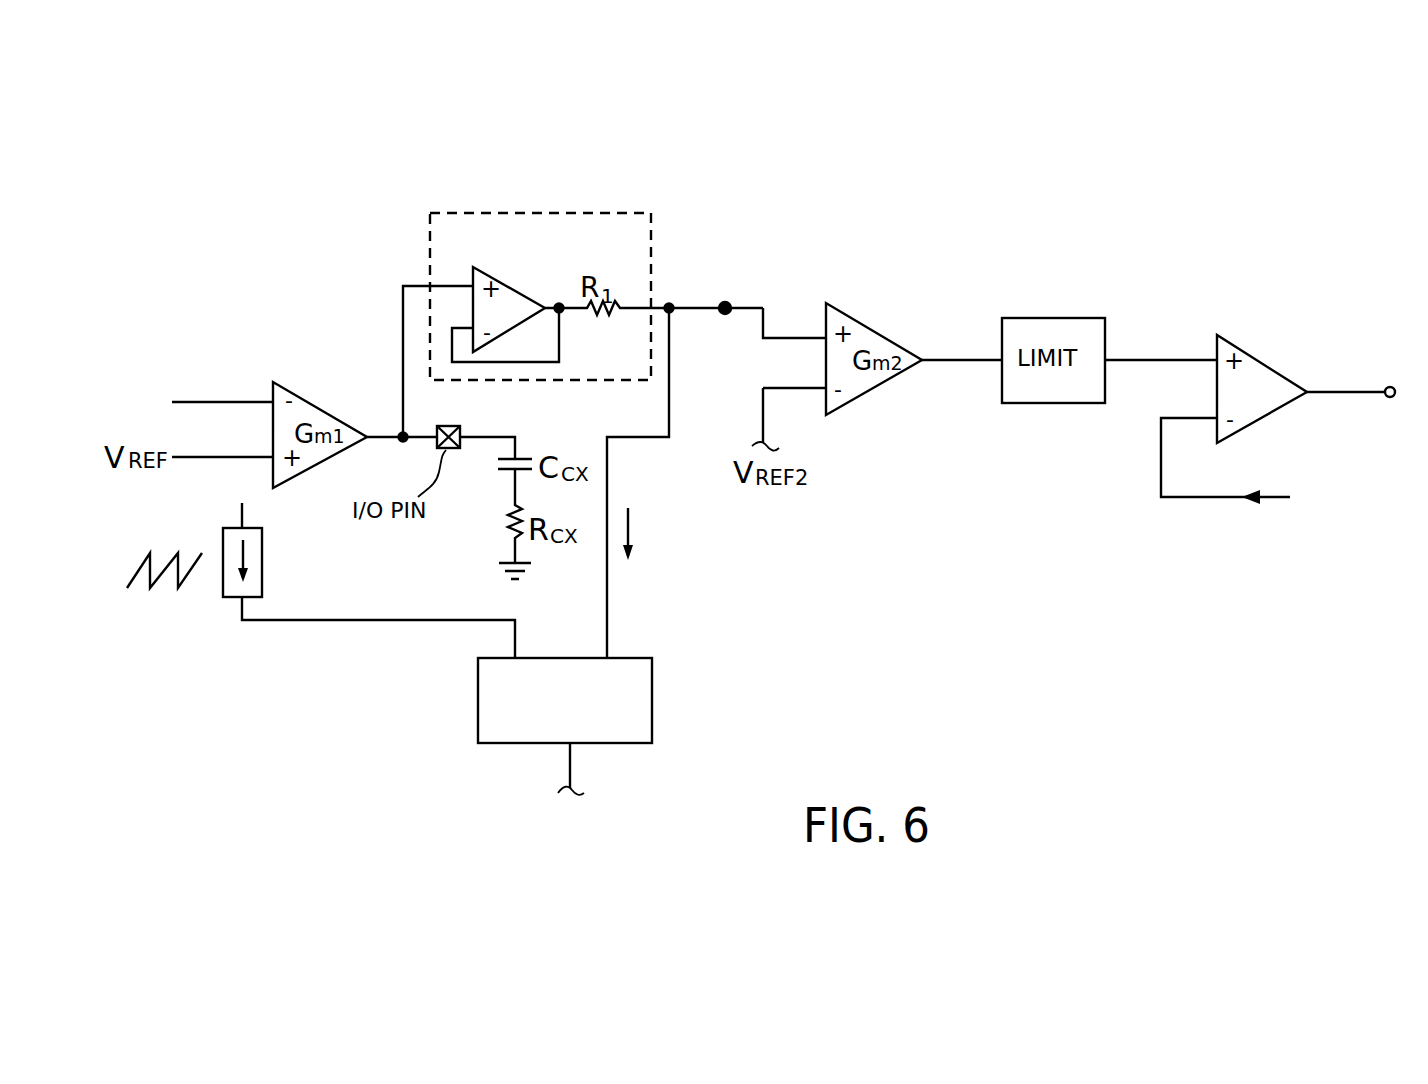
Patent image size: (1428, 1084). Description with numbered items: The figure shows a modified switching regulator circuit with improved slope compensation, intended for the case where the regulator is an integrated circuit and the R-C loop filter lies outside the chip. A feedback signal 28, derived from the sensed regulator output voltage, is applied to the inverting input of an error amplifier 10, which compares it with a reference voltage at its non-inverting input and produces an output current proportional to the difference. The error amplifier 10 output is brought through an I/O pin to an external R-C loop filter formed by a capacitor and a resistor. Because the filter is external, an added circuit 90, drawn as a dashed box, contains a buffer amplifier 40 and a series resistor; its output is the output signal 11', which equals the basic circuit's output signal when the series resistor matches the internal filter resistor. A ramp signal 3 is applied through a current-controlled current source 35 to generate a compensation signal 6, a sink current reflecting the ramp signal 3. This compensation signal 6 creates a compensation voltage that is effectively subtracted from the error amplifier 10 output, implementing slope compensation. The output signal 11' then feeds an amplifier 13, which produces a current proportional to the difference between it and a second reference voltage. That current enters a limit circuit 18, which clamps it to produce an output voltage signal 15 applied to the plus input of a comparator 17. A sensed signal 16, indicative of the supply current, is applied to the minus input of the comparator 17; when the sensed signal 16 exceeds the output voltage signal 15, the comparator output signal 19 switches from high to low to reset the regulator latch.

The feedback signal 28 is at (203, 401).
The error amplifier 10 is at (304, 393).
The added circuit 90 is at (436, 213).
The buffer amplifier 40 is at (504, 290).
The output signal 11' is at (758, 278).
The compensation signal 6 is at (650, 437).
The amplifier 13 is at (866, 328).
The limit circuit 18 is at (1055, 318).
The output voltage signal 15 is at (1165, 360).
The comparator 17 is at (1265, 365).
The sensed signal 16 is at (1215, 497).
The output signal 19 is at (1392, 398).
The ramp signal 3 is at (365, 621).
The current-controlled current source 35 is at (652, 692).